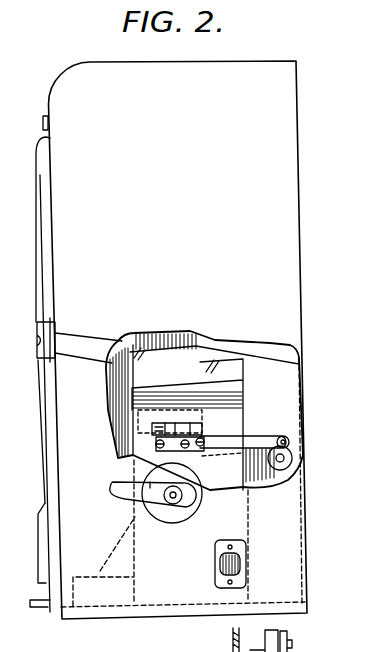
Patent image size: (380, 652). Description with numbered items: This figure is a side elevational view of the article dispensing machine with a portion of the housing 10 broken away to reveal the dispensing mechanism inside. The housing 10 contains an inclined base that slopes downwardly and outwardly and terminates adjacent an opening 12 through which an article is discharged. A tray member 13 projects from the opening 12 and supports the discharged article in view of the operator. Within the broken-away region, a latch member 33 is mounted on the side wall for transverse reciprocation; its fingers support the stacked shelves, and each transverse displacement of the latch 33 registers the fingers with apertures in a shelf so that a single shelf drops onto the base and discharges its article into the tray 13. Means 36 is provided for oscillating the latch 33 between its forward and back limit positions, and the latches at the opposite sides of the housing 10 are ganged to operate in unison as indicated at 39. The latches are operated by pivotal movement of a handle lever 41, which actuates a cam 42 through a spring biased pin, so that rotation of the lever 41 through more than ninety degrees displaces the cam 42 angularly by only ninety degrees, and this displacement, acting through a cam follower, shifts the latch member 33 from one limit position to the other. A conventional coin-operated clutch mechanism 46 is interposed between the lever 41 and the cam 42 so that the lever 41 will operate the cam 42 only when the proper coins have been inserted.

The housing 10 is at (87, 70).
The opening 12 is at (43, 582).
The tray member 13 is at (43, 163).
The latch member 33 is at (134, 455).
The means for oscillating the latch 36 is at (244, 458).
The ganging means 39 is at (280, 467).
The handle lever 41 is at (126, 488).
The cam 42 is at (188, 524).
The coin-operated clutch mechanism 46 is at (240, 410).